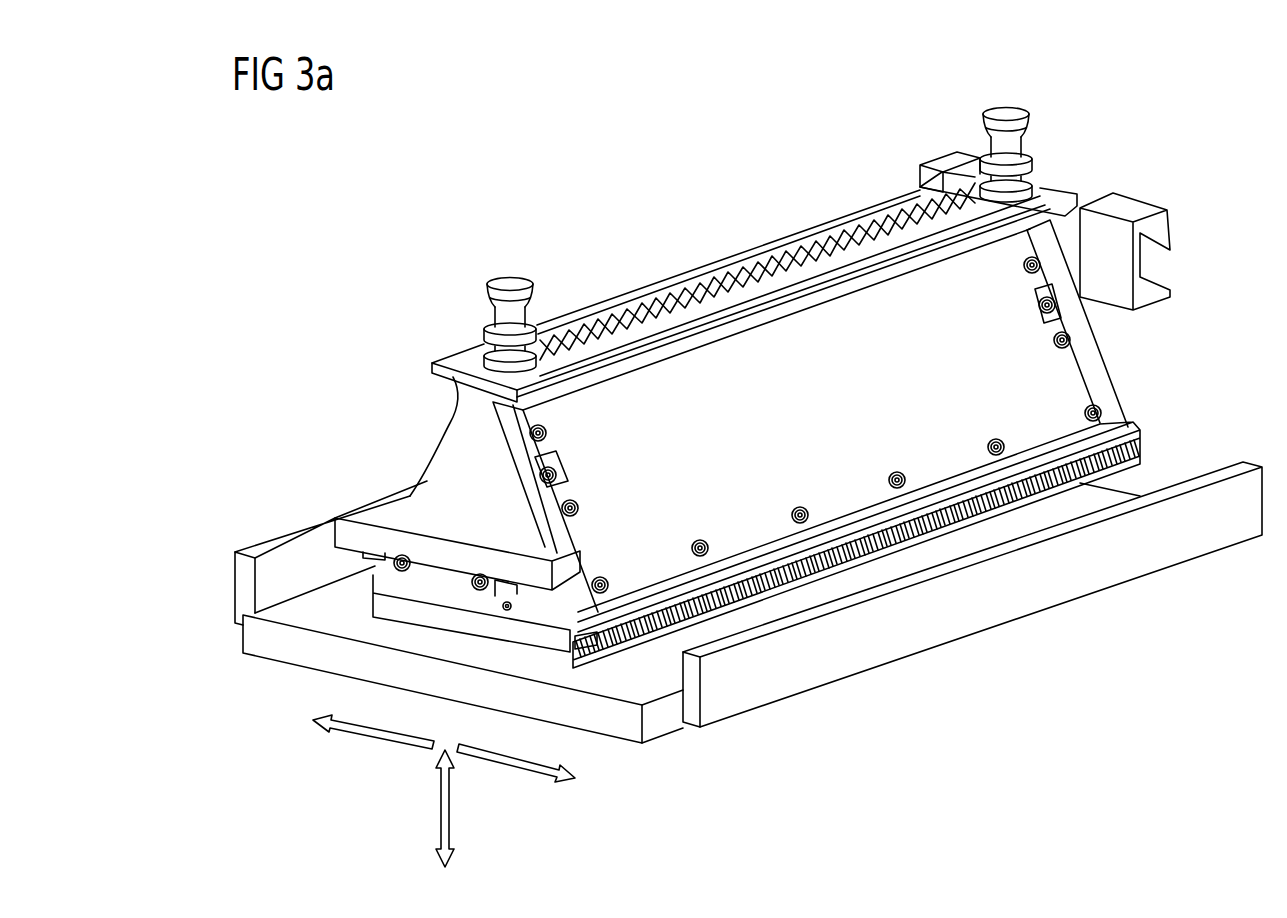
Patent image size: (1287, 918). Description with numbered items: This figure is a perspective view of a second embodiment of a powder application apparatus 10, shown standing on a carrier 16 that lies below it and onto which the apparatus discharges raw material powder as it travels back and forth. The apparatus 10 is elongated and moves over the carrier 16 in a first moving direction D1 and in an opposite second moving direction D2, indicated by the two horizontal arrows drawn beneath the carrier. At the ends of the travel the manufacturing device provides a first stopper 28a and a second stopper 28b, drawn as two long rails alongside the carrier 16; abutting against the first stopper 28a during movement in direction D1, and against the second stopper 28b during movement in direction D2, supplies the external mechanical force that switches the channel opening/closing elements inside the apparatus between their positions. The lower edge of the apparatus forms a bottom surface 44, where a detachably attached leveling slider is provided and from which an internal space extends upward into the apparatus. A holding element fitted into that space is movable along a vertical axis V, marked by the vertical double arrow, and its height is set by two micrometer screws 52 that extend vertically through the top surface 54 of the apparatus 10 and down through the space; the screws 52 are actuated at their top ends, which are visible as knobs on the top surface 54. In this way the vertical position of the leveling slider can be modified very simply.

The powder application apparatus 10 is at (724, 199).
The carrier 16 is at (633, 727).
The first stopper 28a is at (280, 532).
The second stopper 28b is at (927, 630).
The bottom surface 44 is at (463, 632).
The micrometer screws 52 is at (510, 280).
The top surface 54 is at (464, 362).
The first moving direction D1 is at (370, 733).
The second moving direction D2 is at (517, 768).
The vertical axis V is at (442, 815).